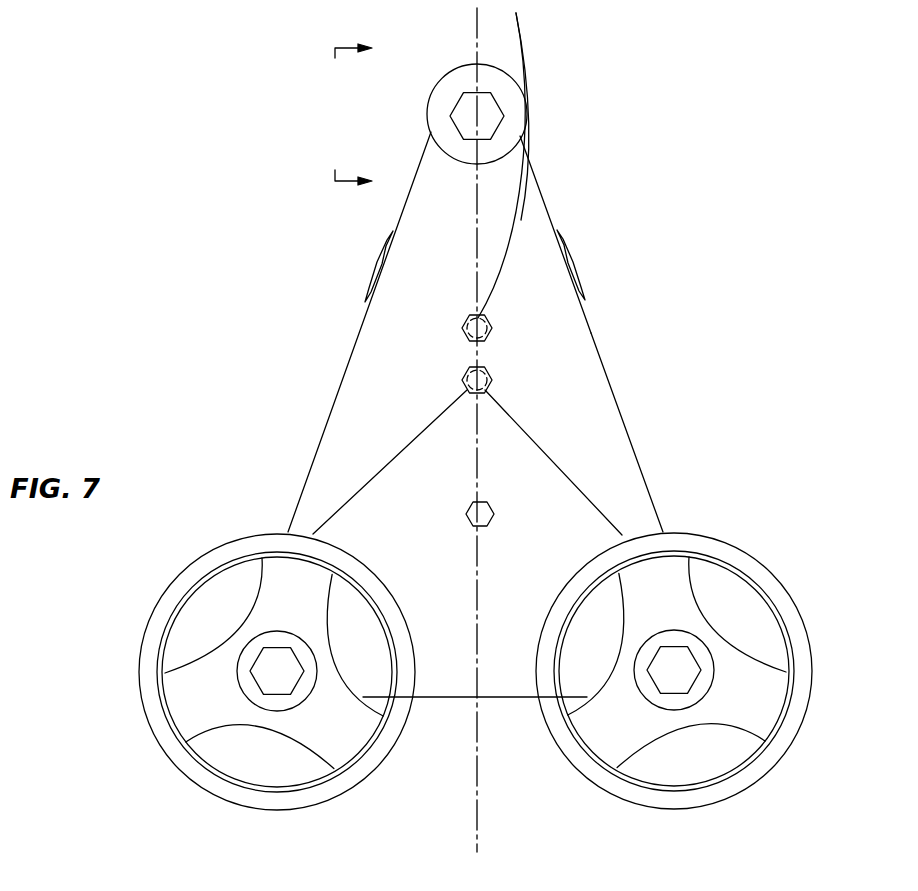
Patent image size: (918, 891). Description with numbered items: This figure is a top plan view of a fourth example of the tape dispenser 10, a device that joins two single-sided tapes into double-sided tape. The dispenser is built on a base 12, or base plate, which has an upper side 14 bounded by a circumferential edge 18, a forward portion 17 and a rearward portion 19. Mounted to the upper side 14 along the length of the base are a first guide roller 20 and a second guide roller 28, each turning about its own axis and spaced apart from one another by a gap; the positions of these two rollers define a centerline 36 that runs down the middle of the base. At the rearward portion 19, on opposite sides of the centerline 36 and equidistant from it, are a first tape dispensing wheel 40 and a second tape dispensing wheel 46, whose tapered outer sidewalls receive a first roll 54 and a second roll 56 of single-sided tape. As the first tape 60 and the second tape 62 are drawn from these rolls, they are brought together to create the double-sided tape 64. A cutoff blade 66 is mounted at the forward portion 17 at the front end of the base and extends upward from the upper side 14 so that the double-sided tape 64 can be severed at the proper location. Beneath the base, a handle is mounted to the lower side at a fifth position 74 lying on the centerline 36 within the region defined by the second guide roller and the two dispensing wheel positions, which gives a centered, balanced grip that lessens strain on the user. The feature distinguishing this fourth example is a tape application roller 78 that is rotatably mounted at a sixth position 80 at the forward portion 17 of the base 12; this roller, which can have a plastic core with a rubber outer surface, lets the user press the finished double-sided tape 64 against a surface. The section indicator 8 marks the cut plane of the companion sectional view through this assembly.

The section line 8- 8 is at (363, 115).
The tape dispenser 10 is at (712, 33).
The base 12 is at (614, 362).
The upper side 14 is at (563, 337).
The forward portion 17 is at (498, 182).
The circumferential edge 18 is at (626, 422).
The rearward portion 19 is at (447, 672).
The first guide roller 20 is at (461, 329).
The second guide roller 28 is at (461, 380).
The centerline 36 is at (480, 823).
The first tape dispensing wheel 40 is at (197, 702).
The second tape dispensing wheel 46 is at (752, 684).
The first roll of single-sided tape 54 is at (220, 788).
The second roll of single-sided tape 56 is at (748, 563).
The first tape 60 is at (358, 490).
The second tape 62 is at (588, 500).
The double-sided tape 64 is at (517, 222).
The cutoff blade 66 is at (388, 250).
The fifth position 74 is at (470, 511).
The tape application roller 78 is at (512, 120).
The sixth position 80 is at (478, 112).